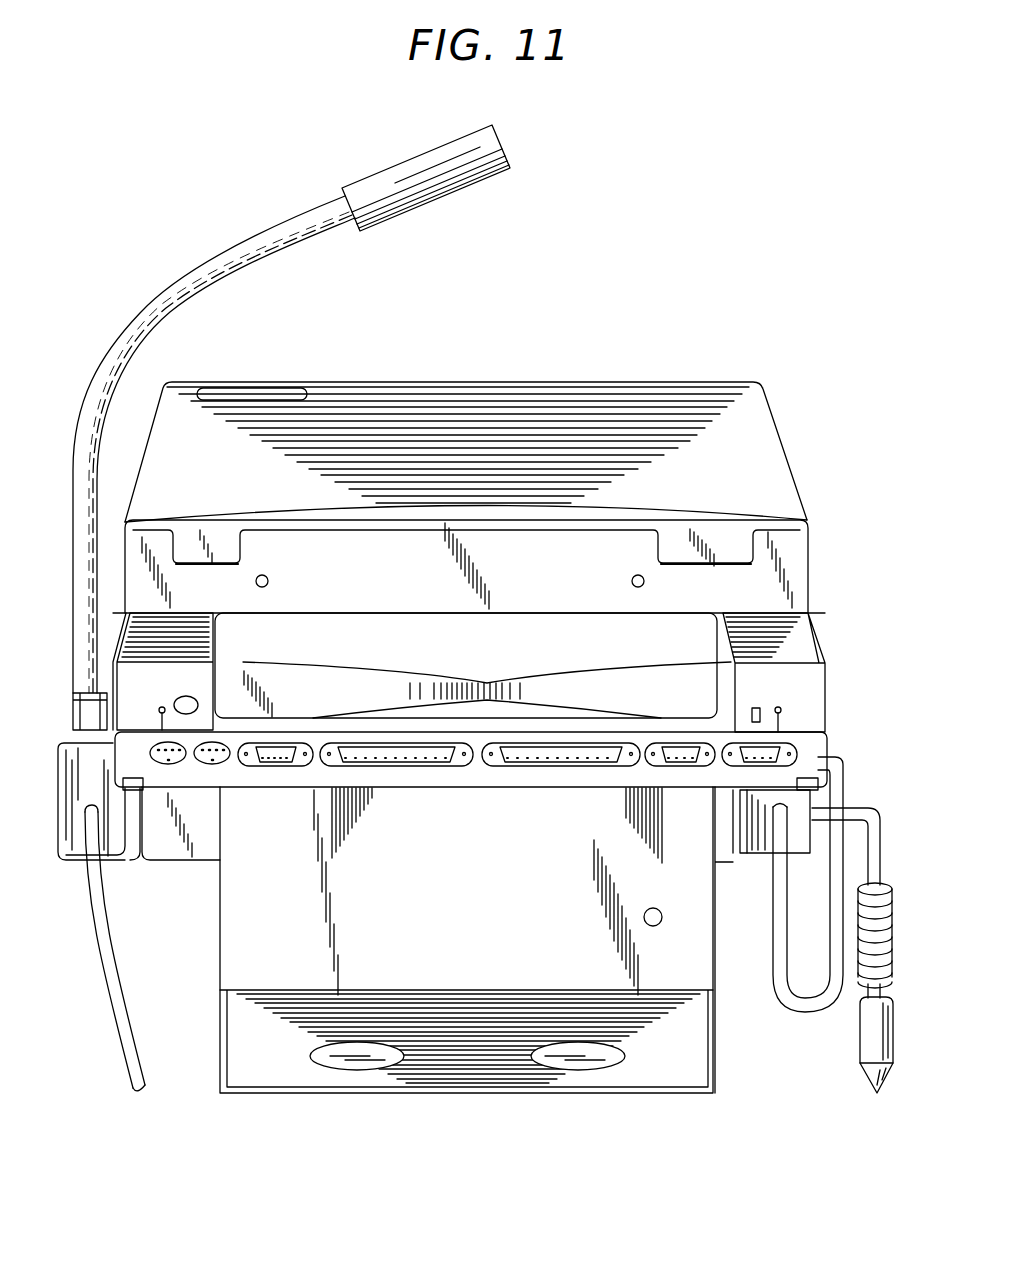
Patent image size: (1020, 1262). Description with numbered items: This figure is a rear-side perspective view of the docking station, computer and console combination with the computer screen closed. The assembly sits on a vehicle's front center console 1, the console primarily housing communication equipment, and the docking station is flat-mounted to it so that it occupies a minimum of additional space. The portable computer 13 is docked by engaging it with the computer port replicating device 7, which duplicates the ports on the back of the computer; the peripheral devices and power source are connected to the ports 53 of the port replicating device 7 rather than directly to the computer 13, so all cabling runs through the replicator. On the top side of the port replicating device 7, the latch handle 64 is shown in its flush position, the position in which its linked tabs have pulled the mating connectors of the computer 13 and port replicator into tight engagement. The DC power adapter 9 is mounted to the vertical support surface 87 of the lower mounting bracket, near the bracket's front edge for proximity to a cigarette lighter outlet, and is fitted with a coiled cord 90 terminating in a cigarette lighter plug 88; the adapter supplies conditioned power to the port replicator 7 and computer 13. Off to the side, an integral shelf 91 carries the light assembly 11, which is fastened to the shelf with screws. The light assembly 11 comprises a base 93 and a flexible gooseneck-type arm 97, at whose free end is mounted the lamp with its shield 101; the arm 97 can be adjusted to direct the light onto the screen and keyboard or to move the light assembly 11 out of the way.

The front center console 1 is at (474, 909).
The computer port replicating device 7 is at (818, 640).
The DC power source (adapter) 9 is at (753, 843).
The electric light assembly 11 is at (72, 700).
The portable computer 13 is at (538, 400).
The ports 53 is at (222, 764).
The top side latch handle 64 is at (477, 653).
The vertical support surface 87 is at (740, 817).
The cigarette lighter plug 88 is at (862, 1072).
The coiled cord 90 is at (858, 955).
The integral shelf 91 is at (115, 858).
The base 93 is at (72, 822).
The flexible gooseneck-type arm 97 is at (210, 270).
The shield 101 is at (447, 170).